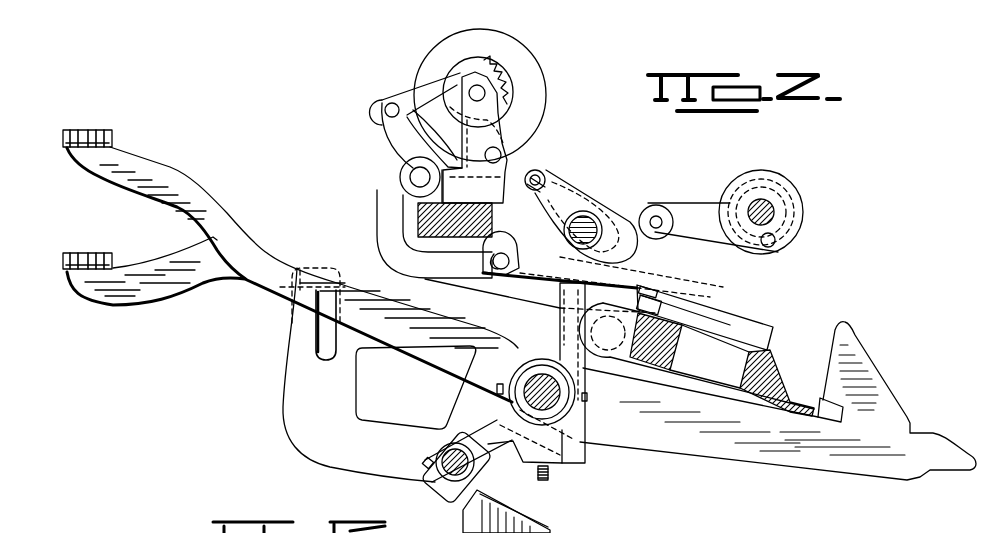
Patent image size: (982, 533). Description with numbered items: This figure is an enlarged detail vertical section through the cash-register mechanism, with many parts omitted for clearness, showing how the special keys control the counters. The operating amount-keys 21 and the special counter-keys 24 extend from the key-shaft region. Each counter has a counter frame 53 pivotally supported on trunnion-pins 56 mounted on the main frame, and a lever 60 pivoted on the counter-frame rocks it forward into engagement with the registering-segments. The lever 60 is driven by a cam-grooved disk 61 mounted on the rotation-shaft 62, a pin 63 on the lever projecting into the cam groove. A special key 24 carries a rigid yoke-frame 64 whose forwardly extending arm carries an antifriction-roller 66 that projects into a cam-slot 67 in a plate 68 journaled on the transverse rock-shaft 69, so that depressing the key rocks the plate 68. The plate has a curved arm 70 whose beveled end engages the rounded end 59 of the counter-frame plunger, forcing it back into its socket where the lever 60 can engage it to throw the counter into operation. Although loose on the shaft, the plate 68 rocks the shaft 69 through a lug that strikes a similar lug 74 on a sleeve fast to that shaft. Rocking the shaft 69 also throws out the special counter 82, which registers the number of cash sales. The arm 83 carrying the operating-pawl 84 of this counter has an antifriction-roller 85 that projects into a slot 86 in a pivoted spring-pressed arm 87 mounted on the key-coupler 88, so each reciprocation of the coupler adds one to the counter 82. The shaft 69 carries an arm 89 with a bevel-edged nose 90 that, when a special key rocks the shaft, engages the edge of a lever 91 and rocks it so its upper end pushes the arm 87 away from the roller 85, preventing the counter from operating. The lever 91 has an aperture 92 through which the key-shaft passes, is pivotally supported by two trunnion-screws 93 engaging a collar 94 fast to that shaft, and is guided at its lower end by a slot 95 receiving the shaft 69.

The operating amount-keys 21 is at (177, 163).
The special counter-keys 24 is at (154, 280).
The counter frame 53 is at (649, 206).
The trunnion-pins 56 is at (588, 230).
The rounded end 59 is at (546, 177).
The lever 60 is at (649, 250).
The cam-grooved disk 61 is at (766, 180).
The rotation-shaft 62 is at (776, 214).
The pin 63 is at (776, 244).
The yoke-frame 64 is at (548, 345).
The antifriction-roller 66 is at (330, 289).
The cam-slot 67 is at (314, 338).
The plate 68 is at (306, 446).
The transverse rock-shaft 69 is at (440, 474).
The curved arm 70 is at (570, 196).
The lug 74 is at (553, 188).
The special counter 82 is at (547, 99).
The arm 83 is at (393, 203).
The operating-pawl 84 is at (430, 88).
The antifriction-roller 85 is at (517, 262).
The slot 86 is at (511, 283).
The spring-pressed arm 87 is at (672, 302).
The key-coupler 88 is at (696, 359).
The arm 89 is at (522, 480).
The bevel-edged nose 90 is at (552, 478).
The lever 91 is at (570, 452).
The aperture 92 is at (578, 414).
The trunnion-screws 93 is at (600, 410).
The collar 94 is at (566, 430).
The slot 95 is at (434, 462).